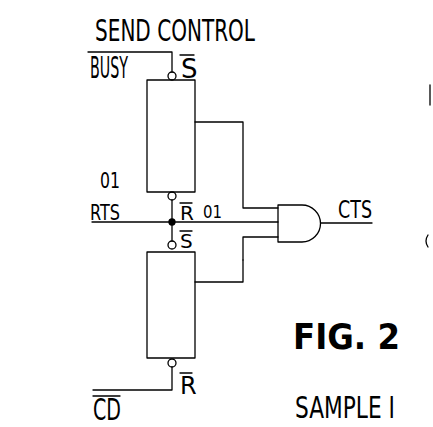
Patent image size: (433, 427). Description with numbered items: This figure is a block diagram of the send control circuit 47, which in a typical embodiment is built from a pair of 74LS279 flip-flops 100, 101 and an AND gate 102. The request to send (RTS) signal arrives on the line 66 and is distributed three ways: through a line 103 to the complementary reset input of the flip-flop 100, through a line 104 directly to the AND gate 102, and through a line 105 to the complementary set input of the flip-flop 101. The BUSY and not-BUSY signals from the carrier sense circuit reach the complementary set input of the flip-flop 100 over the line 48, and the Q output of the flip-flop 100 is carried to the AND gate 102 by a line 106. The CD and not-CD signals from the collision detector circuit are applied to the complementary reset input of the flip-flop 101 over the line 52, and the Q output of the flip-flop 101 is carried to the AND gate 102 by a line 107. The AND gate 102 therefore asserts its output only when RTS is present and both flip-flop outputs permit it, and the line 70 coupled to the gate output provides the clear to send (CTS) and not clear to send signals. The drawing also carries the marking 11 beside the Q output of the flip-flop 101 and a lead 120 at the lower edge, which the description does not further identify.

The send control circuit 47 is at (241, 110).
The line 48 is at (152, 55).
The flipflop 100 is at (220, 162).
The flipflop 101 is at (195, 343).
The AND gate 102 is at (299, 224).
The line 103 is at (171, 217).
The line 104 is at (255, 223).
The line 105 is at (172, 233).
The line 106 is at (244, 160).
The line 107 is at (243, 283).
The Q output 11 is at (218, 276).
The line 52 is at (128, 388).
The line 66 is at (108, 224).
The line 70 is at (330, 226).
The lower circuit line 120 is at (188, 426).